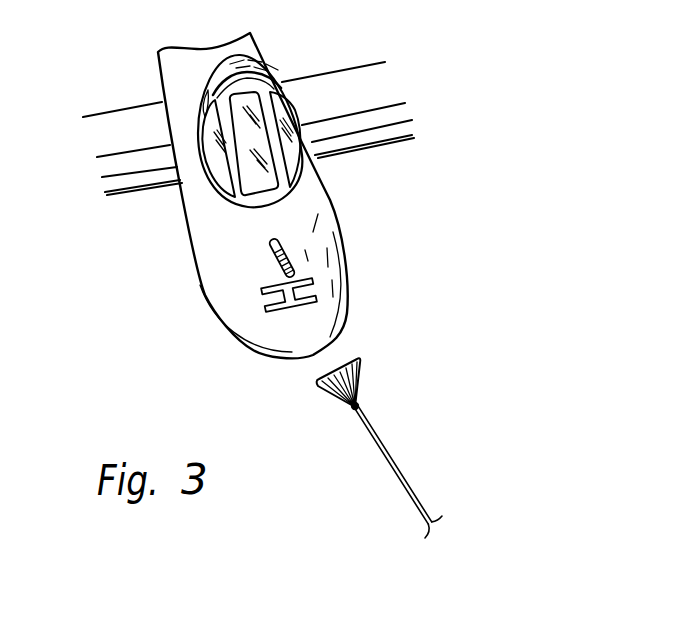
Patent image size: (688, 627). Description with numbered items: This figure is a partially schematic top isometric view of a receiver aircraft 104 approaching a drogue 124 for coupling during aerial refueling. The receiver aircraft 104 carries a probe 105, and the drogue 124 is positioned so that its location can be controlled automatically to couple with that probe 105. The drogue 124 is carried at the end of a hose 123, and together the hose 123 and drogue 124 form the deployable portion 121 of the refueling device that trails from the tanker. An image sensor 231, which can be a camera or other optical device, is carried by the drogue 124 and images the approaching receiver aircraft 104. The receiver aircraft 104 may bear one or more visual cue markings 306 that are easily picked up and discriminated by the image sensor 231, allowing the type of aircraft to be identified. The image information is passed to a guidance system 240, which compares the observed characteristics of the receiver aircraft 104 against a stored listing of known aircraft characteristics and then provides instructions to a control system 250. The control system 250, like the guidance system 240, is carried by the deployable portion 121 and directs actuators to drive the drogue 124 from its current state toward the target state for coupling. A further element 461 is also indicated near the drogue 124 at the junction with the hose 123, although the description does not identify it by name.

The receiver aircraft 104 is at (345, 90).
The probe 105 is at (287, 250).
The visual cue markings 306 is at (280, 320).
The deployable portion 121 is at (400, 428).
The drogue 124 is at (358, 379).
The control system 250 is at (358, 405).
The pivot axis 461 is at (358, 405).
The image sensor 231 is at (355, 405).
The guidance system 240 is at (355, 405).
The hose 123 is at (387, 471).